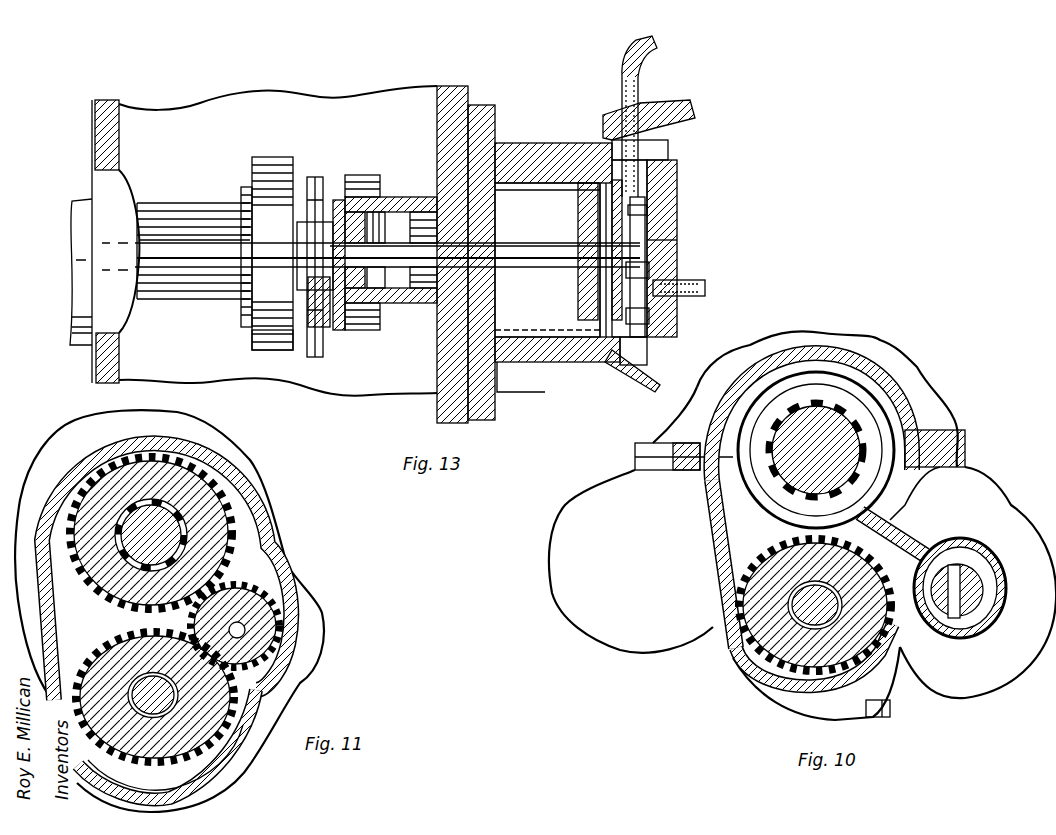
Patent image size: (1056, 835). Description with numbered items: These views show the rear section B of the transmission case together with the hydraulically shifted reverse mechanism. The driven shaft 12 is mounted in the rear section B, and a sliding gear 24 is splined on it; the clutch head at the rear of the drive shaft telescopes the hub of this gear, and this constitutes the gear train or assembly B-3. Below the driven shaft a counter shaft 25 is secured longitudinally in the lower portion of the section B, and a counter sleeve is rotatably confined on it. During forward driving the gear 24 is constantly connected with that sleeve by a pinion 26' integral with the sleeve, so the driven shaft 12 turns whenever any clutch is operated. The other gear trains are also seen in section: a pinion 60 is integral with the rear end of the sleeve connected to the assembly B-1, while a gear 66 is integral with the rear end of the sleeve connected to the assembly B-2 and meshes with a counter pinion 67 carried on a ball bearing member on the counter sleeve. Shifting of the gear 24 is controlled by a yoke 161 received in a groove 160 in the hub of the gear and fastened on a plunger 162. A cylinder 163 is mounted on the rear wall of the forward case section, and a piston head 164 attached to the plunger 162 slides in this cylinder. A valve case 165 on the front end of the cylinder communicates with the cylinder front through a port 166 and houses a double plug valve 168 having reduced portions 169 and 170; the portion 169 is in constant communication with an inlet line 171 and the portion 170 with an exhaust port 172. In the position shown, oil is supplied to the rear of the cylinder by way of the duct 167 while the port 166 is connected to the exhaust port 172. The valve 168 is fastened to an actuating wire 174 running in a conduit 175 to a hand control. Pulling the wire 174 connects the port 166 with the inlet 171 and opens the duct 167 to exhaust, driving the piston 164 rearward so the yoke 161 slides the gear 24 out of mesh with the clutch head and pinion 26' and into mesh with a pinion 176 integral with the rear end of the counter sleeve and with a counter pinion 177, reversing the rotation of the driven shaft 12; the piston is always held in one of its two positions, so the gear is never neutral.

In FIG. 13, the driven shaft 12 is at (162, 238).
In FIG. 11, the driven shaft 12 is at (182, 522).
In FIG. 10, the driven shaft 12 is at (703, 487).
In FIG. 13, the sliding gear 24 is at (257, 158).
In FIG. 11, the sliding gear 24 is at (236, 532).
In FIG. 10, the sliding gear 24 is at (878, 350).
In FIG. 11, the counter shaft 25 is at (114, 641).
In FIG. 10, the counter shaft 25 is at (758, 667).
In FIG. 11, the pinion 26' is at (173, 744).
In FIG. 10, the pinion 26' is at (786, 660).
In FIG. 13, the pinion 60 is at (420, 288).
In FIG. 13, the gear 66 is at (357, 177).
In FIG. 10, the counter pinion 67 is at (910, 657).
In FIG. 13, the groove 160 is at (313, 176).
In FIG. 10, the groove 160 is at (805, 394).
In FIG. 13, the yoke 161 is at (326, 318).
In FIG. 10, the yoke 161 is at (872, 433).
In FIG. 13, the plunger 162 is at (164, 262).
In FIG. 10, the plunger 162 is at (977, 567).
In FIG. 13, the cylinder 163 is at (538, 170).
In FIG. 13, the piston head 164 is at (586, 304).
In FIG. 13, the valve case 165 is at (668, 238).
In FIG. 13, the port 166 is at (672, 186).
In FIG. 13, the duct 167 is at (528, 363).
In FIG. 13, the double plug valve 168 is at (650, 276).
In FIG. 13, the reduced portion 169 is at (652, 317).
In FIG. 13, the reduced portion 170 is at (647, 236).
In FIG. 13, the inlet line 171 is at (708, 288).
In FIG. 13, the exhaust port 172 is at (655, 212).
In FIG. 13, the actuating wire 174 is at (640, 93).
In FIG. 13, the conduit 175 is at (652, 54).
In FIG. 11, the pinion 176 is at (200, 702).
In FIG. 11, the counter pinion 177 is at (275, 628).
In FIG. 13, the rear section B is at (333, 392).
In FIG. 11, the rear section B is at (255, 483).
In FIG. 10, the rear section B is at (842, 392).
In FIG. 13, the gear train B-1 is at (436, 211).
In FIG. 13, the gear train B-2 is at (382, 322).
In FIG. 13, the gear train B-3 is at (258, 341).